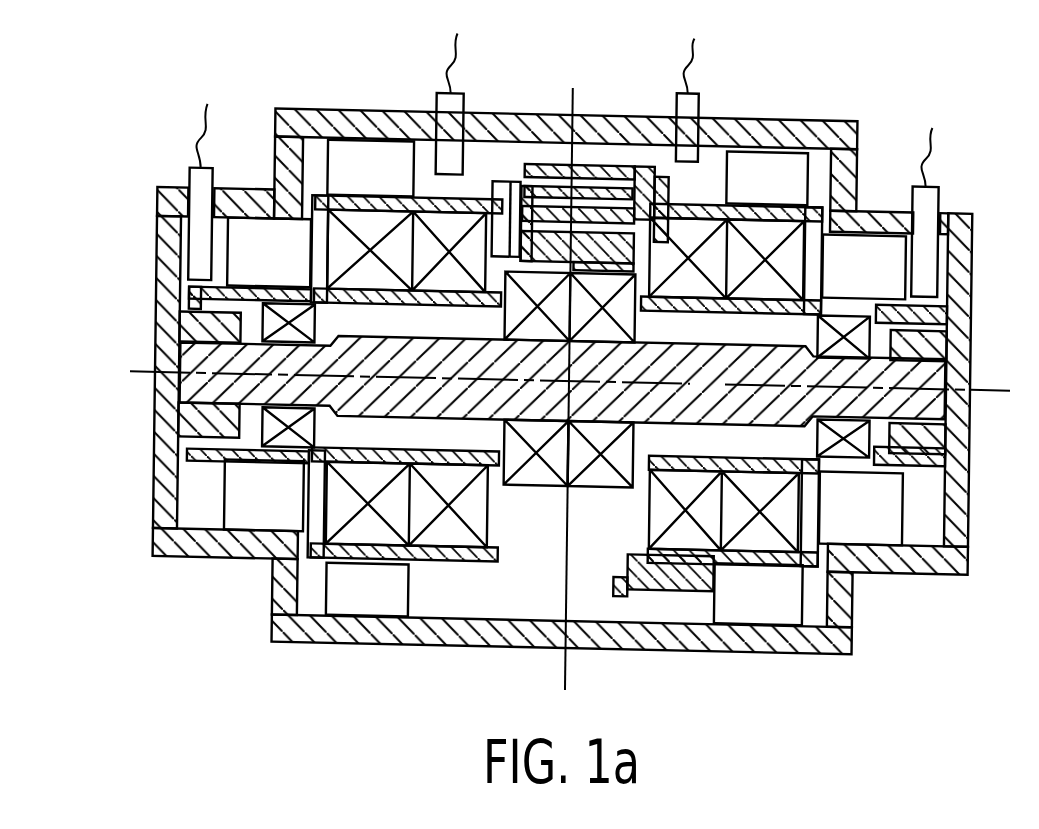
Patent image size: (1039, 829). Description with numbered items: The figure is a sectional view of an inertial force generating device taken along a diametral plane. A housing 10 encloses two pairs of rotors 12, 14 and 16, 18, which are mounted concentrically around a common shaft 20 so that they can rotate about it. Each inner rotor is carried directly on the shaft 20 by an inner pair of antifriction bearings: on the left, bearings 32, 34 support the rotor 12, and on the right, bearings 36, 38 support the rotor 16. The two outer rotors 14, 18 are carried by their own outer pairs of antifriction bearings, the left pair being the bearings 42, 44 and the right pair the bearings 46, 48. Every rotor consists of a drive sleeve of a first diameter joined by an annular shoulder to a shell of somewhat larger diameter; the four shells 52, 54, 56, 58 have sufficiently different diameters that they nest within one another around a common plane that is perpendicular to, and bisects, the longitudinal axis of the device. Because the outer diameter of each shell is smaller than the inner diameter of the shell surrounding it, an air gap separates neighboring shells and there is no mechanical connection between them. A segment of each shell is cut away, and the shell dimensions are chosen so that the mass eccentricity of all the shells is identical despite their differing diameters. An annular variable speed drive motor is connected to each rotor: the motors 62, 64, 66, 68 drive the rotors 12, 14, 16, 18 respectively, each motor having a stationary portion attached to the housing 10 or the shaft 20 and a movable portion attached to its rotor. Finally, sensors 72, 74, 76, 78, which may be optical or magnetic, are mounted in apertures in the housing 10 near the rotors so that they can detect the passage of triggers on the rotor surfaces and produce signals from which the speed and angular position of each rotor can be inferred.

The housing 10 is at (476, 648).
The rotor 12 is at (206, 288).
The rotor 14 is at (428, 115).
The rotor 16 is at (969, 301).
The rotor 18 is at (720, 135).
The common shaft 20 is at (696, 390).
The antifriction bearing 32 is at (212, 464).
The antifriction bearing 34 is at (546, 493).
The antifriction bearing 36 is at (595, 491).
The antifriction bearing 38 is at (906, 458).
The antifriction bearing 42 is at (325, 515).
The antifriction bearing 44 is at (490, 524).
The antifriction bearing 46 is at (675, 573).
The antifriction bearing 48 is at (815, 507).
The shell 52 is at (506, 206).
The shell 54 is at (517, 166).
The shell 56 is at (650, 168).
The shell 58 is at (590, 164).
The variable speed drive motor 62 is at (249, 273).
The variable speed drive motor 64 is at (353, 184).
The variable speed drive motor 66 is at (842, 276).
The variable speed drive motor 68 is at (750, 188).
The sensor 72 is at (182, 186).
The sensor 74 is at (444, 91).
The sensor 76 is at (935, 180).
The sensor 78 is at (697, 112).